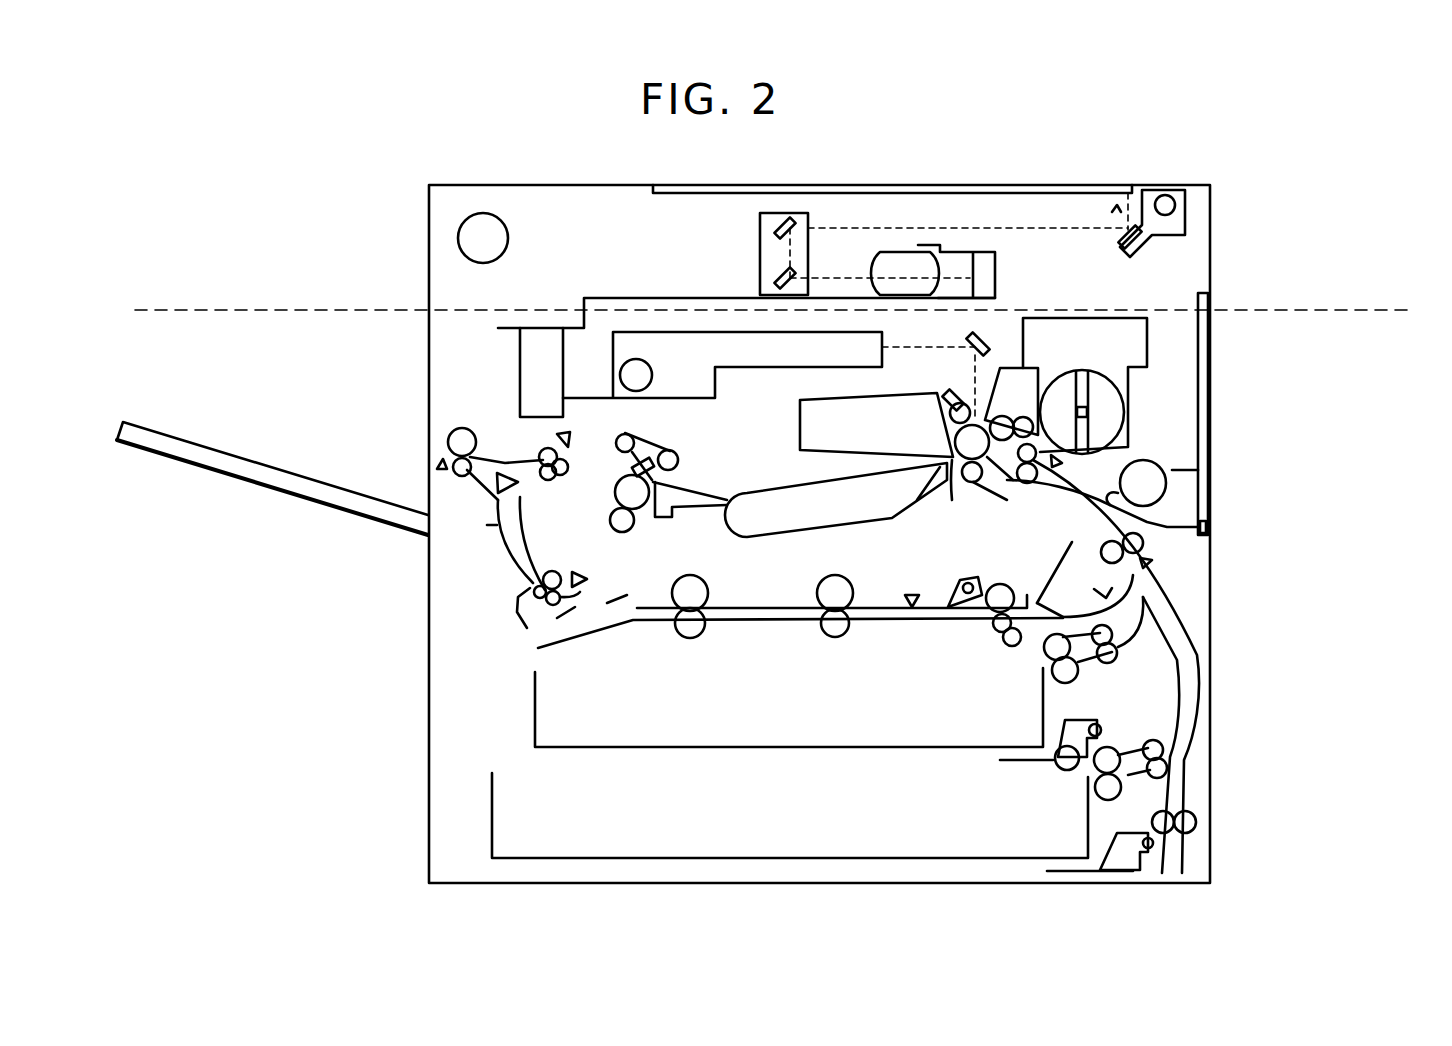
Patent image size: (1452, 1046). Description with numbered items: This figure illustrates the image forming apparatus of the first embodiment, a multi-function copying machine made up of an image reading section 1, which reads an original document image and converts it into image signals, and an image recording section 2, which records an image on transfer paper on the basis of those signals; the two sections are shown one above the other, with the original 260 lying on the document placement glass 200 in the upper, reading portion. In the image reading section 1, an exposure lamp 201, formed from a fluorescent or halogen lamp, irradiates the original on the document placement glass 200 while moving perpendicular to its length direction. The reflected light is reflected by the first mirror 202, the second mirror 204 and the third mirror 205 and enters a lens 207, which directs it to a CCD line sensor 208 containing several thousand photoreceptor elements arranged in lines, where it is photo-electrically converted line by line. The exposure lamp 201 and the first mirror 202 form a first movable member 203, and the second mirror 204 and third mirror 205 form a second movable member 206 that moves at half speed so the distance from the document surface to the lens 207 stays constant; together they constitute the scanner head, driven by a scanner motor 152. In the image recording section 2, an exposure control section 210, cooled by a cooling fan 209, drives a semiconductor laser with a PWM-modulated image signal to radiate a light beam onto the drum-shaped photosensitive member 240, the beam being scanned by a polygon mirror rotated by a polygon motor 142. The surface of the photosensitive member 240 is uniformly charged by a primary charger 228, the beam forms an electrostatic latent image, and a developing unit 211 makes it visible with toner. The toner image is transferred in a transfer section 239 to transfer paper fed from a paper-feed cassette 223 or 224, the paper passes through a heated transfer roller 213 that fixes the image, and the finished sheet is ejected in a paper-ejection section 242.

The image reading section 1 is at (1339, 297).
The image recording section 2 is at (1339, 318).
The polygon motor 142 is at (653, 374).
The scanner motor 152 is at (458, 238).
The document placement glass 200 is at (924, 185).
The exposure lamp 201 is at (1162, 195).
The first mirror 202 is at (1122, 250).
The first movable member 203 is at (1167, 237).
The second mirror 204 is at (772, 228).
The third mirror 205 is at (770, 280).
The second movable member 206 is at (760, 253).
The lens 207 is at (902, 252).
The CCD line sensor 208 is at (995, 268).
The cooling fan 209 is at (545, 335).
The exposure control section 210 is at (637, 335).
The developing unit 211 is at (1137, 362).
The transfer roller 213 is at (646, 518).
The paper-feed cassette 223 is at (535, 718).
The paper-feed cassette 224 is at (492, 810).
The primary charger 228 is at (953, 397).
The transfer section 239 is at (982, 482).
The photosensitive member 240 is at (957, 485).
The paper-ejection section 242 is at (245, 458).
The original 260 is at (1115, 207).